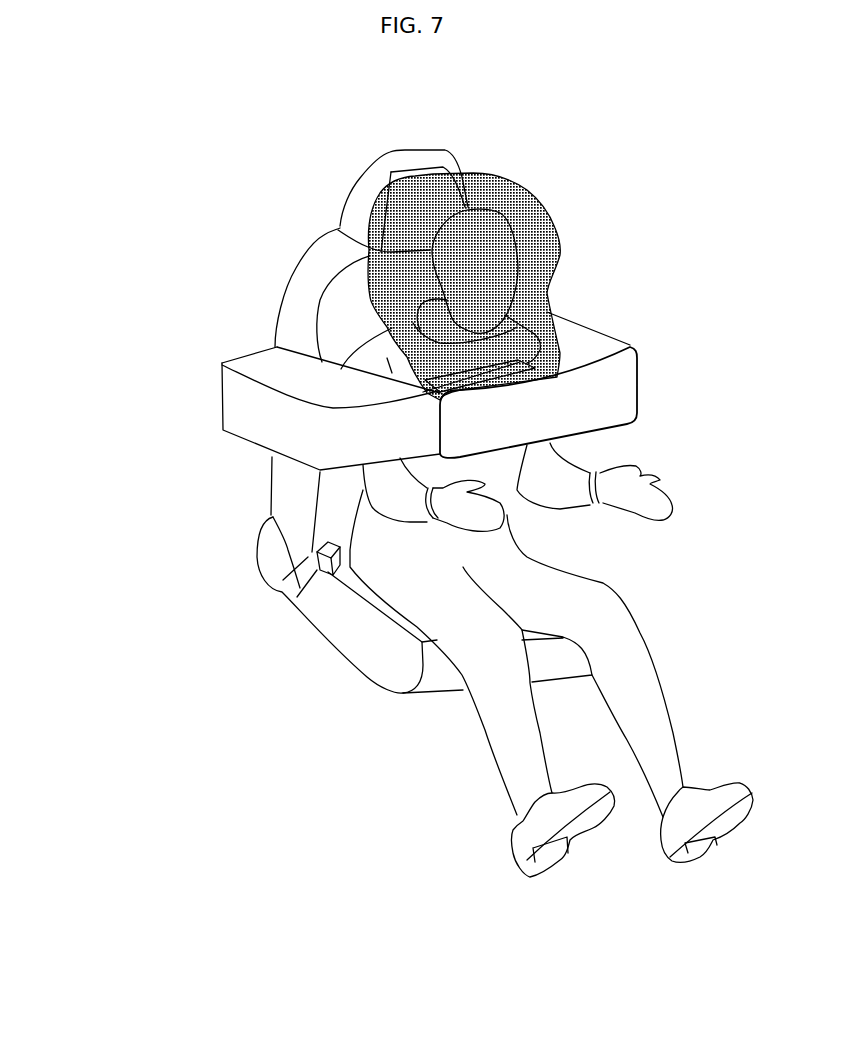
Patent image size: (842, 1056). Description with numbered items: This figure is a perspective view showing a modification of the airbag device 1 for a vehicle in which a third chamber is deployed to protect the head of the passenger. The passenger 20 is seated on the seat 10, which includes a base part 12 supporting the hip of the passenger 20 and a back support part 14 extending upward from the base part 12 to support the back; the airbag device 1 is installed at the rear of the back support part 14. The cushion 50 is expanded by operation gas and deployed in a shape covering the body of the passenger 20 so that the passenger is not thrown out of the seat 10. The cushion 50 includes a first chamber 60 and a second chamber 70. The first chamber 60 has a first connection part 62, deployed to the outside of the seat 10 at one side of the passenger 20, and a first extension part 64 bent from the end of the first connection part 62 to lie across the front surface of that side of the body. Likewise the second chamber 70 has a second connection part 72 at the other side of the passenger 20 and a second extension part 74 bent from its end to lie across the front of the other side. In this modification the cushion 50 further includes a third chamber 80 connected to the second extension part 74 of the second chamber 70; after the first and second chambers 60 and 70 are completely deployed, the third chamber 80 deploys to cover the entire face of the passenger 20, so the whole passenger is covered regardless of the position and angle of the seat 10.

The airbag device 1 is at (168, 480).
The seat 10 is at (299, 228).
The base part 12 is at (373, 660).
The back support part 14 is at (298, 292).
The passenger 20 is at (593, 605).
The cushion 50 is at (244, 456).
The first chamber 60 is at (122, 368).
The first connection part 62 is at (278, 372).
The first extension part 64 is at (384, 427).
The second chamber 70 is at (606, 241).
The second connection part 72 is at (583, 340).
The second extension part 74 is at (547, 410).
The third chamber 80 is at (540, 213).